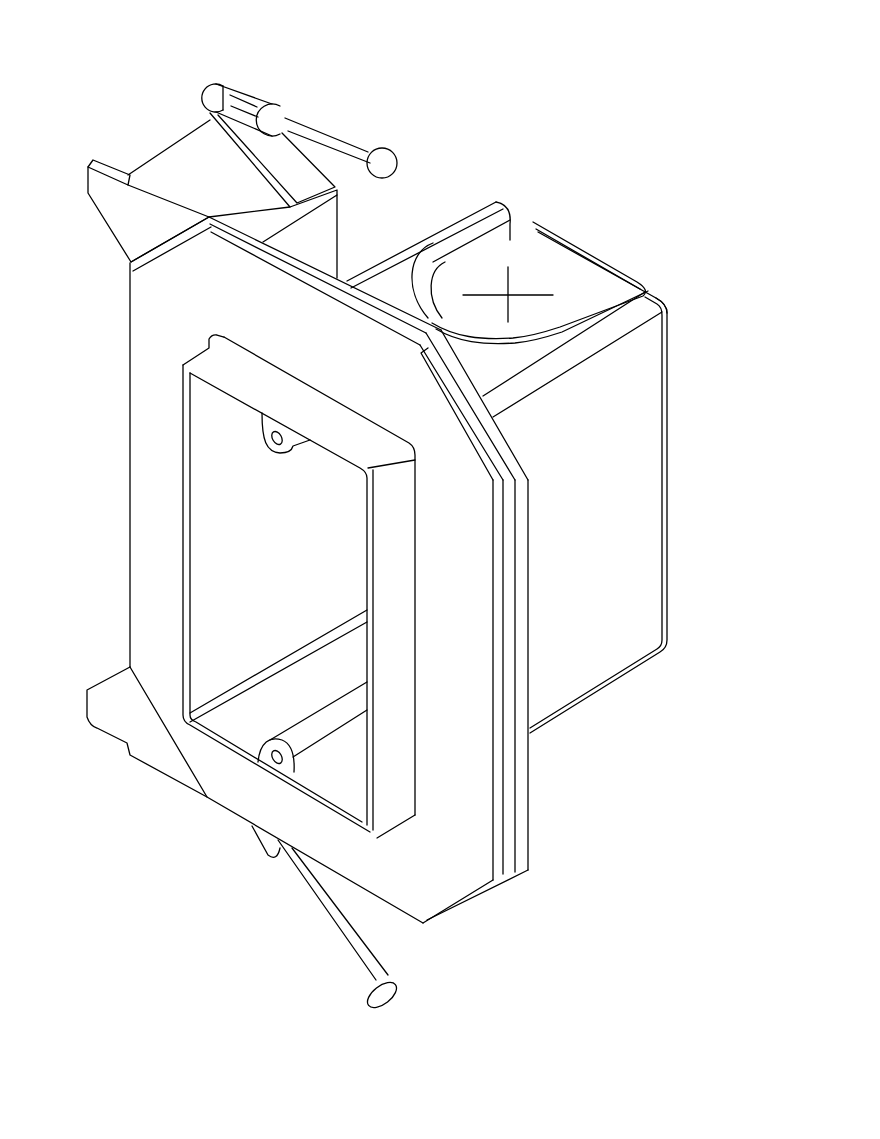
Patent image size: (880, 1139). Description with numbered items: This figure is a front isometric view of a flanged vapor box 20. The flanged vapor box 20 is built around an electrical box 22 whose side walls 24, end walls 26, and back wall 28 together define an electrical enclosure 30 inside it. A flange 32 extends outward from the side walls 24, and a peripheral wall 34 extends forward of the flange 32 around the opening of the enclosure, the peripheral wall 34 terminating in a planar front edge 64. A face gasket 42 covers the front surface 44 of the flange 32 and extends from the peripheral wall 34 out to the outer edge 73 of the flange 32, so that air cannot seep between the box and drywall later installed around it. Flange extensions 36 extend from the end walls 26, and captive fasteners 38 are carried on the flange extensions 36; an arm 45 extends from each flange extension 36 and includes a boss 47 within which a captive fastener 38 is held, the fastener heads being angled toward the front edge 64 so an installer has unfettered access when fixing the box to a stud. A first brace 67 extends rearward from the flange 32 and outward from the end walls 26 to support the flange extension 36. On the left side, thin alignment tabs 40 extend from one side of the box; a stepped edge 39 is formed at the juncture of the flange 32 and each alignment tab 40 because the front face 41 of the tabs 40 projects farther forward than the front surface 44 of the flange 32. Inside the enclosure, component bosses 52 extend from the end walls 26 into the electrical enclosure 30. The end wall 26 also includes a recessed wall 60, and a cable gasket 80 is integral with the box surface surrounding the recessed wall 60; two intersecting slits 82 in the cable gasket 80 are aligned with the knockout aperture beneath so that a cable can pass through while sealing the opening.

The flanged vapor box 20 is at (548, 130).
The electrical box 22 is at (666, 475).
The side walls 24 is at (577, 531).
The end walls 26 is at (477, 368).
The back wall 28 is at (667, 368).
The electrical enclosure 30 is at (213, 517).
The flange 32 is at (530, 780).
The peripheral wall 34 is at (400, 580).
The flange extensions 36 is at (203, 188).
The captive fasteners 38 is at (337, 148).
The stepped edge 39 is at (177, 244).
The alignment tabs 40 is at (124, 162).
The front face 41 is at (129, 226).
The face gasket 42 is at (302, 351).
The front surface 44 is at (514, 824).
The arm 45 is at (283, 160).
The boss 47 is at (250, 90).
The component bosses 52 is at (275, 456).
The recessed wall 60 is at (428, 277).
The planar front edge 64 is at (370, 540).
The first brace 67 is at (305, 243).
The outer edge 73 is at (523, 642).
The cable gasket 80 is at (600, 270).
The intersecting slits 82 is at (512, 284).